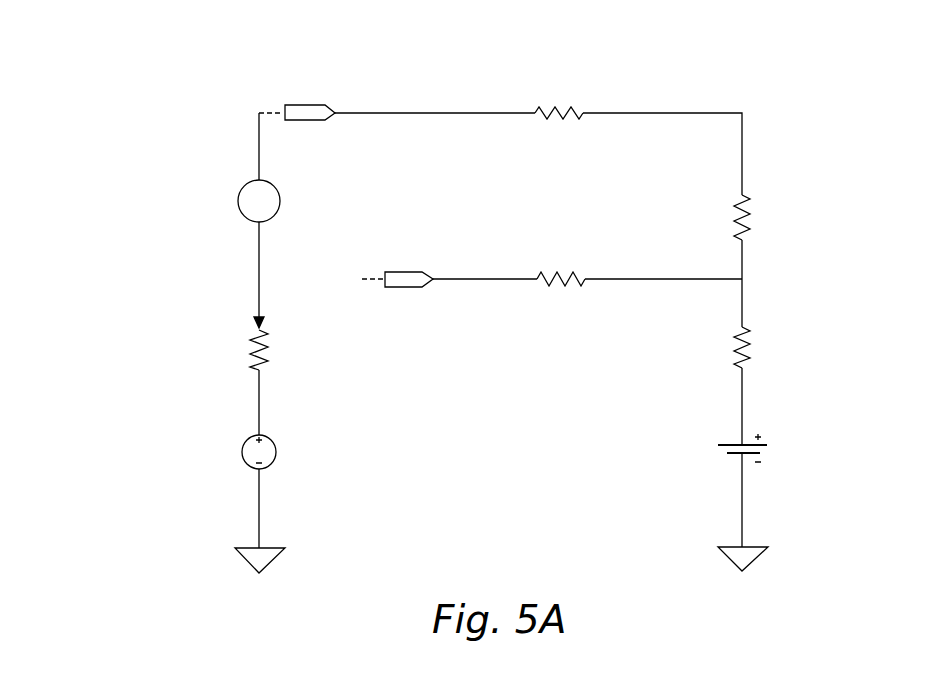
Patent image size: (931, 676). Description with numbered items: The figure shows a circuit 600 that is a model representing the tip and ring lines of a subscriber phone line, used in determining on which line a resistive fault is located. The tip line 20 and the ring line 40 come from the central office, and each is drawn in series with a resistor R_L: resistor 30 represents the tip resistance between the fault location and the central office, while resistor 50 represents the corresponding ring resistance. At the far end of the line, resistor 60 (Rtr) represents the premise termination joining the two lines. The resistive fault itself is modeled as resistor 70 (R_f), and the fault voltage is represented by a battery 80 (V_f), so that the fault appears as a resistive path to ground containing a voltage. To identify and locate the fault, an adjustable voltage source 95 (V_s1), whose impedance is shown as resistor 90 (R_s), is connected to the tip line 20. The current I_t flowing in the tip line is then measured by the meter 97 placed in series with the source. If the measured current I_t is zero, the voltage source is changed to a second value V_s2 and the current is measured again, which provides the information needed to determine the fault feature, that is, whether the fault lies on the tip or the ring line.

The circuit 600 is at (154, 131).
The tip line 20 is at (310, 100).
The tip resistance resistor 30 is at (553, 102).
The ring line 40 is at (407, 265).
The ring resistance resistor 50 is at (572, 260).
The premise termination resistor 60 is at (755, 215).
The resistive fault resistor 70 is at (758, 350).
The fault voltage battery 80 is at (780, 450).
The source impedance resistor 90 is at (285, 360).
The voltage source 95 is at (283, 450).
The ammeter 97 is at (283, 193).